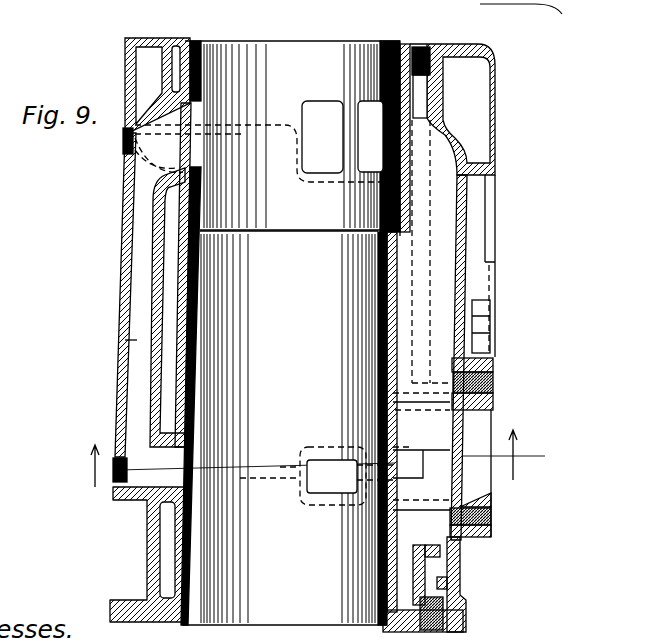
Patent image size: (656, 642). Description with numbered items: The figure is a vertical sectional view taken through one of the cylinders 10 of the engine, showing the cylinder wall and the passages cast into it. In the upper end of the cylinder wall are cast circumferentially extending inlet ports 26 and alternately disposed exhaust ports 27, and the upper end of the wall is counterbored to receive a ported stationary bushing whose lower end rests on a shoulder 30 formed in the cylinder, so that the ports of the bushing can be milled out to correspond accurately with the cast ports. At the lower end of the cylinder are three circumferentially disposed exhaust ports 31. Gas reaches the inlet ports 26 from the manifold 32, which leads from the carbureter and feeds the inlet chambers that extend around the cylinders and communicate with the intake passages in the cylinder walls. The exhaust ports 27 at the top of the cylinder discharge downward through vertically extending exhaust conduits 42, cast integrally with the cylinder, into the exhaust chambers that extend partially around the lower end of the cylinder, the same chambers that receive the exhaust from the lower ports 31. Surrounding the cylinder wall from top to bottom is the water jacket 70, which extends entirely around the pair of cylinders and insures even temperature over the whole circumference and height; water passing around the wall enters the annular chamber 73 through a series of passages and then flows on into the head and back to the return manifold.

The cylinder 10 is at (258, 43).
The inlet port 26 is at (292, 242).
The exhaust port 27 is at (322, 137).
The shoulder 30 is at (200, 232).
The exhaust port 31 is at (306, 470).
The manifold 32 is at (145, 82).
The exhaust conduit 42 is at (137, 345).
The water jacket 70 is at (170, 298).
The annular chamber 73 is at (178, 60).